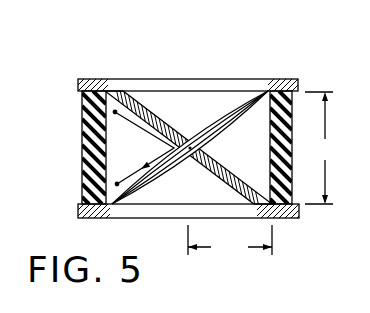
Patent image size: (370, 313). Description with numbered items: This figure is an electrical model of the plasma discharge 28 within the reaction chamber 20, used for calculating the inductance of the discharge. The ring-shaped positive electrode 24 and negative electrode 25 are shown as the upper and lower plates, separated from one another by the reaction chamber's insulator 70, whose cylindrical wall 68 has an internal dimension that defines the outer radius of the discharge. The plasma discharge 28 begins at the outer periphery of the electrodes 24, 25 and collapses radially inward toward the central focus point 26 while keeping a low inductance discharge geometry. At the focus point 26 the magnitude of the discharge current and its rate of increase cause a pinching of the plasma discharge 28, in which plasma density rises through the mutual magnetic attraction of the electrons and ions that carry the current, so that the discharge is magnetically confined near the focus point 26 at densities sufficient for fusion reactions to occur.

The reaction chamber 20 is at (188, 60).
The positive electrode 24 is at (276, 79).
The negative electrode 25 is at (290, 219).
The central focus point 26 is at (190, 148).
The plasma discharge 28 is at (227, 112).
The cylindrical wall 68 is at (97, 131).
The insulator 70 is at (95, 108).